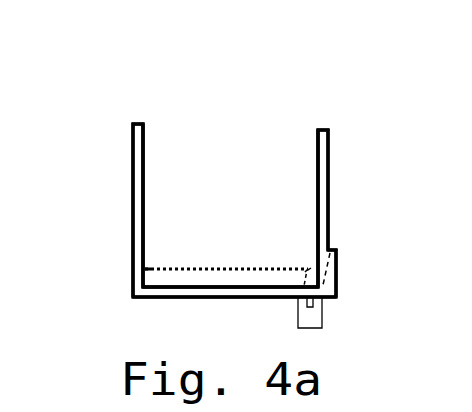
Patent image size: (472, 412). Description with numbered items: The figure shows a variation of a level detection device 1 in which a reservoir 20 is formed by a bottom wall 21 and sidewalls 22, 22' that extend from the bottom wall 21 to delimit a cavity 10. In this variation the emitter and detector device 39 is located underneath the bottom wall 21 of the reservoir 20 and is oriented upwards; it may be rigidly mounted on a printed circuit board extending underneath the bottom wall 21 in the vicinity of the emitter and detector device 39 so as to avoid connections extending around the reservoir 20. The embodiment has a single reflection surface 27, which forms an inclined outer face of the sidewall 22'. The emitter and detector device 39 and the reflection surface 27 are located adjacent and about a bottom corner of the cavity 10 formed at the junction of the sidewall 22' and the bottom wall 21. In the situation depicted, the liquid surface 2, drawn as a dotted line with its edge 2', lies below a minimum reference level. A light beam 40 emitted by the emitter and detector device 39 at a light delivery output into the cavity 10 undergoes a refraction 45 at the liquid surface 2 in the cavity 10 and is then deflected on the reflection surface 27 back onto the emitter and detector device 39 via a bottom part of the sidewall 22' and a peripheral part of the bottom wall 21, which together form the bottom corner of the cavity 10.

The device 1 is at (135, 85).
The reservoir 20 is at (223, 135).
The sidewall 22 is at (106, 199).
The sidewall 22' is at (290, 192).
The bottom wall 21 is at (232, 297).
The reflection surface 27 is at (338, 242).
The light beam 40 is at (330, 270).
The cavity 10 is at (230, 205).
The liquid surface 2 is at (226, 240).
The film edge 2' is at (110, 269).
The refraction 45 is at (311, 268).
The emitter and detector device 39 is at (317, 318).